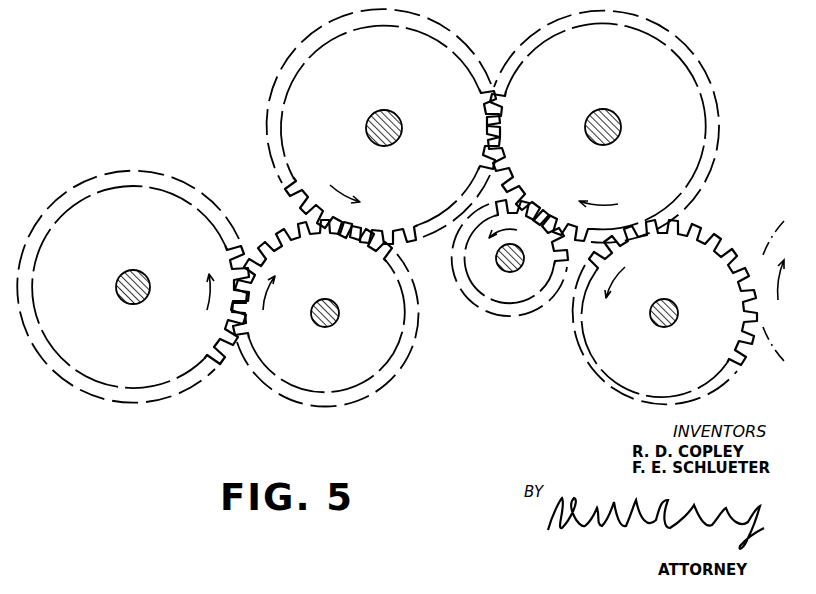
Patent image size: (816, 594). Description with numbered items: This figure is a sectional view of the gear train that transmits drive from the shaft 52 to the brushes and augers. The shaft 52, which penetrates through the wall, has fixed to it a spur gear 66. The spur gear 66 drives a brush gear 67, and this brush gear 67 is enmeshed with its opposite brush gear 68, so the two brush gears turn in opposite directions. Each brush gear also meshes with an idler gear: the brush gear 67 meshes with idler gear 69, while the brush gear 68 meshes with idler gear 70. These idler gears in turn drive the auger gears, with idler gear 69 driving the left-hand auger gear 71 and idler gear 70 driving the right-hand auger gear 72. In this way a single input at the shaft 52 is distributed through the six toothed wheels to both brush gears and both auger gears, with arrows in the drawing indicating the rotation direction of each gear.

The right-hand auger gear 72 is at (140, 176).
The idler gear 70 is at (350, 383).
The brush gear 68 is at (292, 128).
The brush gear 67 is at (696, 117).
The spur gear 66 is at (502, 297).
The shaft 52 is at (522, 268).
The idler gear 69 is at (602, 351).
The left-hand auger gear 71 is at (766, 229).